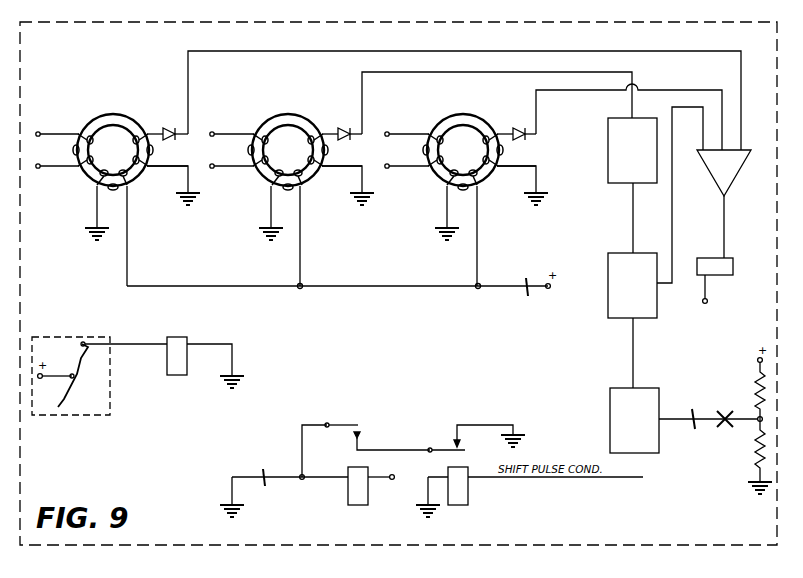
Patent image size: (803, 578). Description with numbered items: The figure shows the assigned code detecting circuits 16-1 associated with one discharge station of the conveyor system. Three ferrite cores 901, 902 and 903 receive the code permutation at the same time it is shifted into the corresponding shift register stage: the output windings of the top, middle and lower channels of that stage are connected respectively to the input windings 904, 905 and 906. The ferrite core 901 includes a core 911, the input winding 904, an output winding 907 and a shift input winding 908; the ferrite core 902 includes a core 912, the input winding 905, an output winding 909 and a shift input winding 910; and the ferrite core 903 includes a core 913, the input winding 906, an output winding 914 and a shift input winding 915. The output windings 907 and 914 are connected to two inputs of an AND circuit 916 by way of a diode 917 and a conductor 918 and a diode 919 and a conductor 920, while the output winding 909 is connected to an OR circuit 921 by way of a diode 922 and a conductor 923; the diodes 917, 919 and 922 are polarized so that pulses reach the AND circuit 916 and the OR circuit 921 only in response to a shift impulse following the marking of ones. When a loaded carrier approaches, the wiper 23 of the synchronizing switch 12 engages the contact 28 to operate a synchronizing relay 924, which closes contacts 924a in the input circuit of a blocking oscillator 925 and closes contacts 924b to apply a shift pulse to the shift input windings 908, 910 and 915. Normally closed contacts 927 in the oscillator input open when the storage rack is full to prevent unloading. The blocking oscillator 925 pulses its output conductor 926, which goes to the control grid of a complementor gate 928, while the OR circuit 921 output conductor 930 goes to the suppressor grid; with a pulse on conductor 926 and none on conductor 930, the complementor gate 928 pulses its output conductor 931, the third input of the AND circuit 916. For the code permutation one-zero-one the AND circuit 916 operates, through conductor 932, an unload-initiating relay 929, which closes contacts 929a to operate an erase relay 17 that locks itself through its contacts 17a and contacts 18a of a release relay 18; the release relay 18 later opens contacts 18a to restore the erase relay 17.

The assigned code detecting circuit 16-1 is at (652, 22).
The ferrite core 901 is at (97, 110).
The ferrite core 902 is at (273, 112).
The ferrite core 903 is at (447, 114).
The input winding 904 is at (78, 168).
The input winding 905 is at (253, 168).
The input winding 906 is at (428, 166).
The output winding 907 is at (150, 168).
The output winding 909 is at (324, 168).
The output winding 914 is at (499, 168).
The shift input winding 908 is at (96, 195).
The shift input winding 910 is at (270, 195).
The shift input winding 915 is at (446, 195).
The core 911 is at (134, 120).
The core 912 is at (308, 118).
The core 913 is at (481, 119).
The diode 917 is at (165, 130).
The diode 922 is at (340, 130).
The diode 919 is at (514, 130).
The conductor 918 is at (357, 51).
The conductor 923 is at (424, 72).
The conductor 920 is at (706, 90).
The OR circuit 921 is at (610, 118).
The output conductor 930 is at (632, 215).
The complementor gate 928 is at (608, 253).
The output conductor 931 is at (673, 241).
The AND circuit 916 is at (712, 184).
The conductor 932 is at (724, 221).
The unload-initiating relay 929 is at (719, 276).
The output conductor 926 is at (632, 355).
The blocking oscillator 925 is at (614, 388).
The contacts 924a is at (706, 386).
The contacts 924b is at (528, 292).
The normally closed contacts 927 is at (727, 428).
The synchronizing switch 12 is at (56, 338).
The contact 28 is at (85, 344).
The wiper 23 is at (68, 384).
The synchronizing relay 924 is at (186, 338).
The contacts 929a is at (275, 460).
The contacts 17a is at (362, 436).
The contacts 18a is at (455, 443).
The erase relay 17 is at (363, 505).
The release relay 18 is at (462, 505).